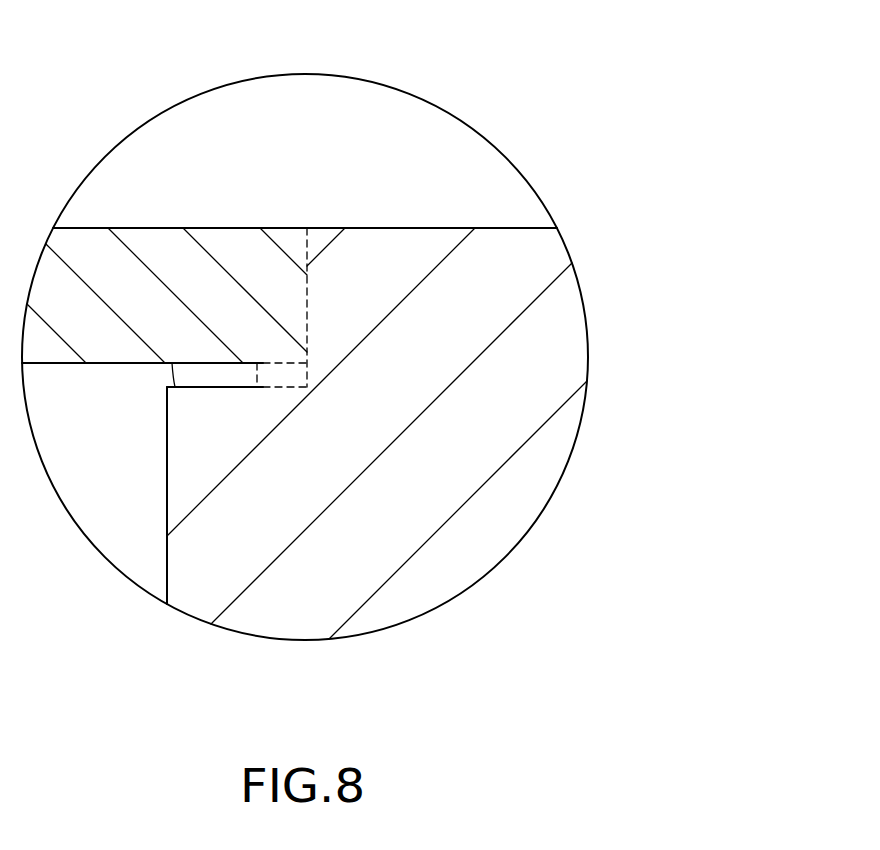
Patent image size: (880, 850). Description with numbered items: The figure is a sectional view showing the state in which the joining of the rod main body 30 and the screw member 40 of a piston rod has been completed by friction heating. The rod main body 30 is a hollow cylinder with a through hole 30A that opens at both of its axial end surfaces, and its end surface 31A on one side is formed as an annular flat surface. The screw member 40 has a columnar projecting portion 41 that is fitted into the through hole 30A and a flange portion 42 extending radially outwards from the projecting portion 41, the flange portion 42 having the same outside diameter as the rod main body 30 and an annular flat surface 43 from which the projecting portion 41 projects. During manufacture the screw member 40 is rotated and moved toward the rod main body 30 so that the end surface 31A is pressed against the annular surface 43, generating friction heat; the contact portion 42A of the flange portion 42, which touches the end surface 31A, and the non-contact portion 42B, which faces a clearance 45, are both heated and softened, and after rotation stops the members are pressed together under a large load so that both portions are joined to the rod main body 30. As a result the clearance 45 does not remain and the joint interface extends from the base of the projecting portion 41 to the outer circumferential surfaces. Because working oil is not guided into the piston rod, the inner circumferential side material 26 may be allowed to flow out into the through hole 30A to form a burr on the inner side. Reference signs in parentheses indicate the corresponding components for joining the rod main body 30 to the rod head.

The screw member 40 is at (515, 227).
The rod main body 30 is at (163, 305).
The through hole 30A is at (97, 364).
The flange portion 42 is at (460, 227).
The annular surface 43 is at (308, 252).
The end surface 31A is at (308, 283).
The contact portion 42A is at (315, 302).
The non-contact portion 42B is at (315, 372).
The projecting portion 41 is at (193, 428).
The clearance 45 is at (160, 372).
The inner circumferential side material 26 is at (223, 372).